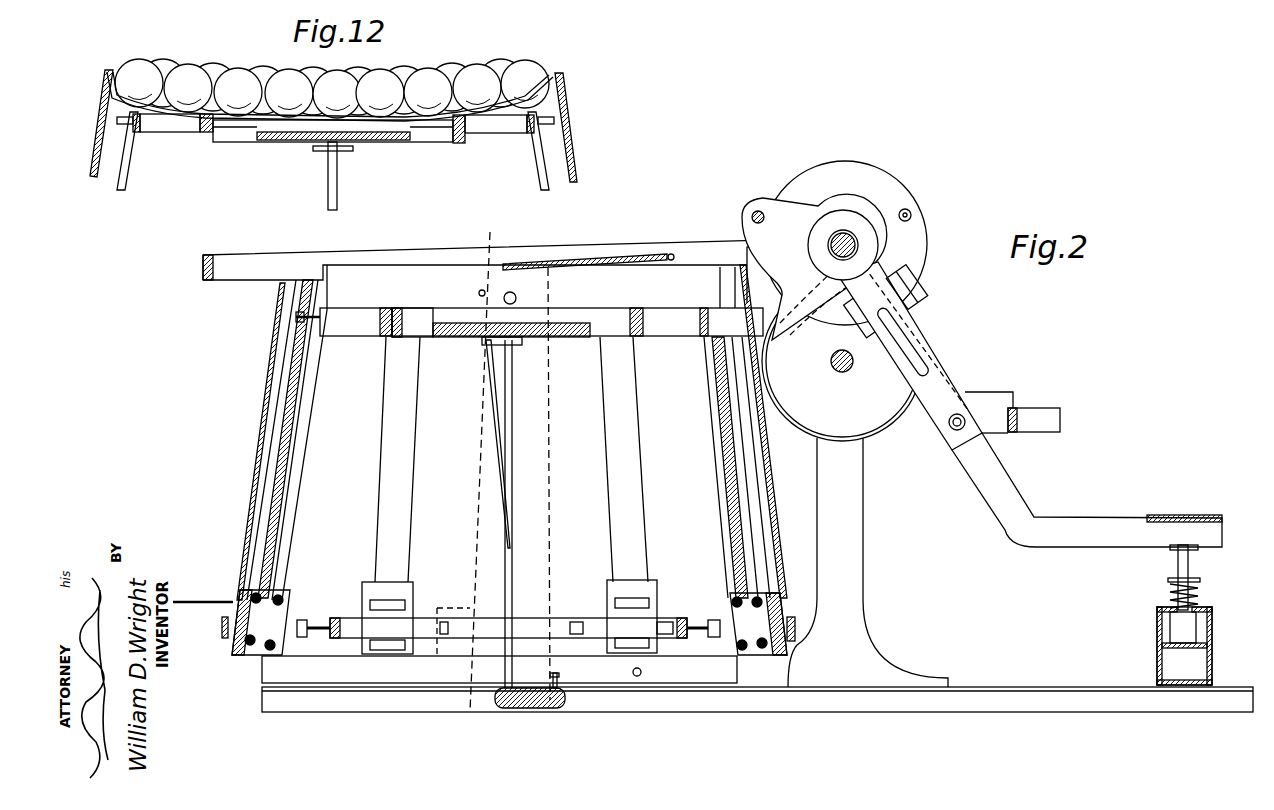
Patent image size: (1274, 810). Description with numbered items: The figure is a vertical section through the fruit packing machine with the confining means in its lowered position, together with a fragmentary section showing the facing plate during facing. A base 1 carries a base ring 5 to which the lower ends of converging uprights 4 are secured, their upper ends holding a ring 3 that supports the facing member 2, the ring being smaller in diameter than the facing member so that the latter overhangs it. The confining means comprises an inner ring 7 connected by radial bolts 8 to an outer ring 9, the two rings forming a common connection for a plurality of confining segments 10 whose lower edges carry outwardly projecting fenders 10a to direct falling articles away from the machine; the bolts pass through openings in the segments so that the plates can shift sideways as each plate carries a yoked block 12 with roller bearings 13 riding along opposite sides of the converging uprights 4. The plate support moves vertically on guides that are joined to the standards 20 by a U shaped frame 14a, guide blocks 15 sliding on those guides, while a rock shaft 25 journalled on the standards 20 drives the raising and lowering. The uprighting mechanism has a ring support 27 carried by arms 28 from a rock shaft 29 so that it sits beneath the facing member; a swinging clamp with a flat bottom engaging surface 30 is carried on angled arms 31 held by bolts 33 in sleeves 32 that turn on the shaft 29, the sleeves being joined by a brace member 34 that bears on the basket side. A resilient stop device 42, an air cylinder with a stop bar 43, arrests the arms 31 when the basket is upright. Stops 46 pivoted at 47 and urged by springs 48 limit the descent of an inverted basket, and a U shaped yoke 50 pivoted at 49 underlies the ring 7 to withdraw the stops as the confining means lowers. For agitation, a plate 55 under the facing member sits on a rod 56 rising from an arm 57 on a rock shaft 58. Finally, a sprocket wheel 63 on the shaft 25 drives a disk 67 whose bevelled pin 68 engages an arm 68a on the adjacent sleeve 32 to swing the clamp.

In FIG. 2, the base 1 is at (770, 692).
In FIG. 12, the facing member 2 is at (160, 134).
In FIG. 12, the ring 3 is at (502, 134).
In FIG. 2, the ring 3 is at (355, 308).
In FIG. 12, the converging uprights 4 is at (125, 181).
In FIG. 2, the converging uprights 4 is at (290, 405).
In FIG. 2, the base ring 5 is at (345, 684).
In FIG. 2, the inner ring 7 is at (340, 618).
In FIG. 2, the radial bolts 8 is at (325, 636).
In FIG. 2, the outer ring 9 is at (796, 646).
In FIG. 12, the confining segments 10 is at (104, 129).
In FIG. 2, the confining segments 10 is at (405, 265).
In FIG. 2, the fenders or guards 10a is at (200, 600).
In FIG. 2, the hanger 12 is at (428, 580).
In FIG. 2, the roller bearings 13 is at (410, 560).
In FIG. 2, the U shaped frame 14a is at (240, 257).
In FIG. 2, the guide blocks 15 is at (453, 620).
In FIG. 2, the standards 20 is at (863, 584).
In FIG. 2, the rock shaft 25 is at (838, 372).
In FIG. 12, the support 27 is at (460, 144).
In FIG. 2, the support 27 is at (393, 333).
In FIG. 2, the arms 28 is at (780, 296).
In FIG. 2, the rock shaft 29 is at (845, 232).
In FIG. 2, the flat surface 30 is at (1195, 515).
In FIG. 2, the angled arms 31 is at (1082, 541).
In FIG. 2, the sleeves 32 is at (942, 362).
In FIG. 2, the bolts 33 is at (957, 431).
In FIG. 2, the brace member 34 is at (1040, 431).
In FIG. 2, the resilient stop device 42 is at (1158, 656).
In FIG. 2, the stop bar 43 is at (1192, 561).
In FIG. 2, the stops 46 is at (512, 292).
In FIG. 2, the pivot 47 is at (517, 312).
In FIG. 2, the springs 48 is at (661, 254).
In FIG. 2, the pivot 49 is at (510, 459).
In FIG. 2, the U shaped yoke 50 is at (494, 441).
In FIG. 12, the plate 55 is at (371, 141).
In FIG. 2, the plate 55 is at (566, 340).
In FIG. 12, the rod 56 is at (328, 184).
In FIG. 2, the rod 56 is at (514, 529).
In FIG. 2, the arm 57 is at (516, 708).
In FIG. 2, the rock shaft 58 is at (560, 701).
In FIG. 2, the gear or sprocket wheel 63 is at (876, 428).
In FIG. 2, the disk 67 is at (828, 176).
In FIG. 2, the cam or bevelled pin 68 is at (918, 215).
In FIG. 2, the arm 68a is at (924, 294).